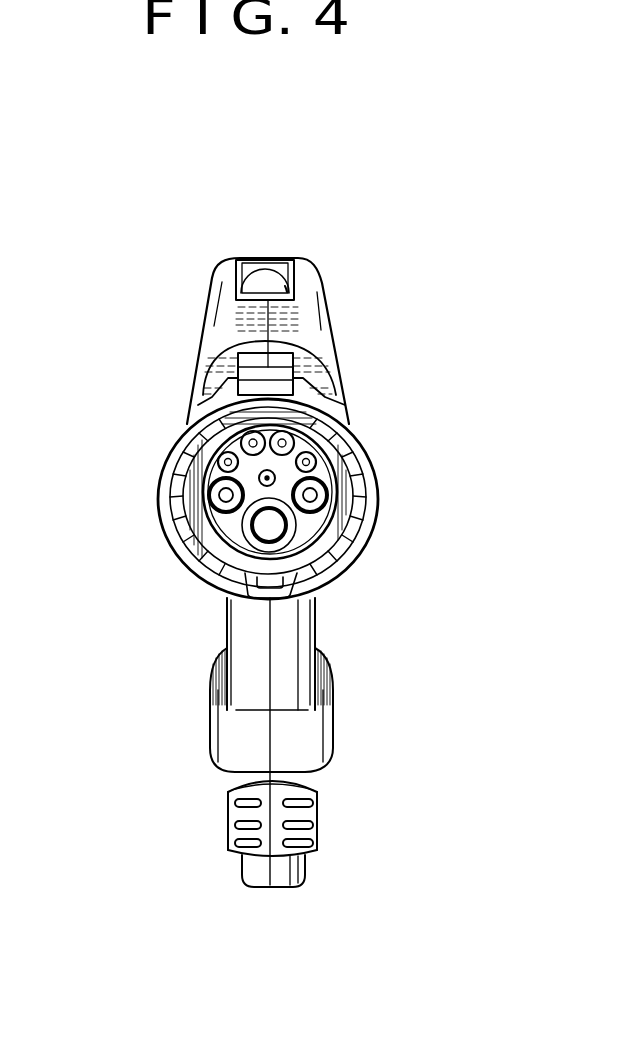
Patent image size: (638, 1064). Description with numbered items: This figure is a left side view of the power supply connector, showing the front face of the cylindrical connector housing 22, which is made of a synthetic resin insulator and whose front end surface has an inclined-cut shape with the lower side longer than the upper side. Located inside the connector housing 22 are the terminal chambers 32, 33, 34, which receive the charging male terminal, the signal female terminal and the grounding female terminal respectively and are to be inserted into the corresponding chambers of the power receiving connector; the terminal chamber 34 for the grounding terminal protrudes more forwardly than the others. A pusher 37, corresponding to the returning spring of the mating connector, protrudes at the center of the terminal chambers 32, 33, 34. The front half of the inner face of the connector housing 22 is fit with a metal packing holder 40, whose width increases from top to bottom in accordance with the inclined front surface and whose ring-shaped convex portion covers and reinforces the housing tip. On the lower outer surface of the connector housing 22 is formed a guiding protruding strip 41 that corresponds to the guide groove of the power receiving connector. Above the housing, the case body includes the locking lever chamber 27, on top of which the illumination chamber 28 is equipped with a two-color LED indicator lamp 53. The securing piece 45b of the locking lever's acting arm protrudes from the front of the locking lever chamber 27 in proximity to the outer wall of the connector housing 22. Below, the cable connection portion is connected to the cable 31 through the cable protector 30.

The connector housing 22 is at (218, 565).
The locking lever chamber 27 is at (326, 326).
The illumination chamber 28 is at (290, 277).
The cable protector 30 is at (318, 804).
The cable 31 is at (305, 868).
The terminal chamber 32 is at (212, 501).
The terminal chamber 33 is at (220, 466).
The terminal chamber 34 is at (250, 527).
The pusher 37 is at (275, 478).
The packing holder 40 is at (225, 512).
The guiding protruding strip 41 is at (273, 588).
The securing piece 45b is at (285, 388).
The indicator lamp 53 is at (270, 273).